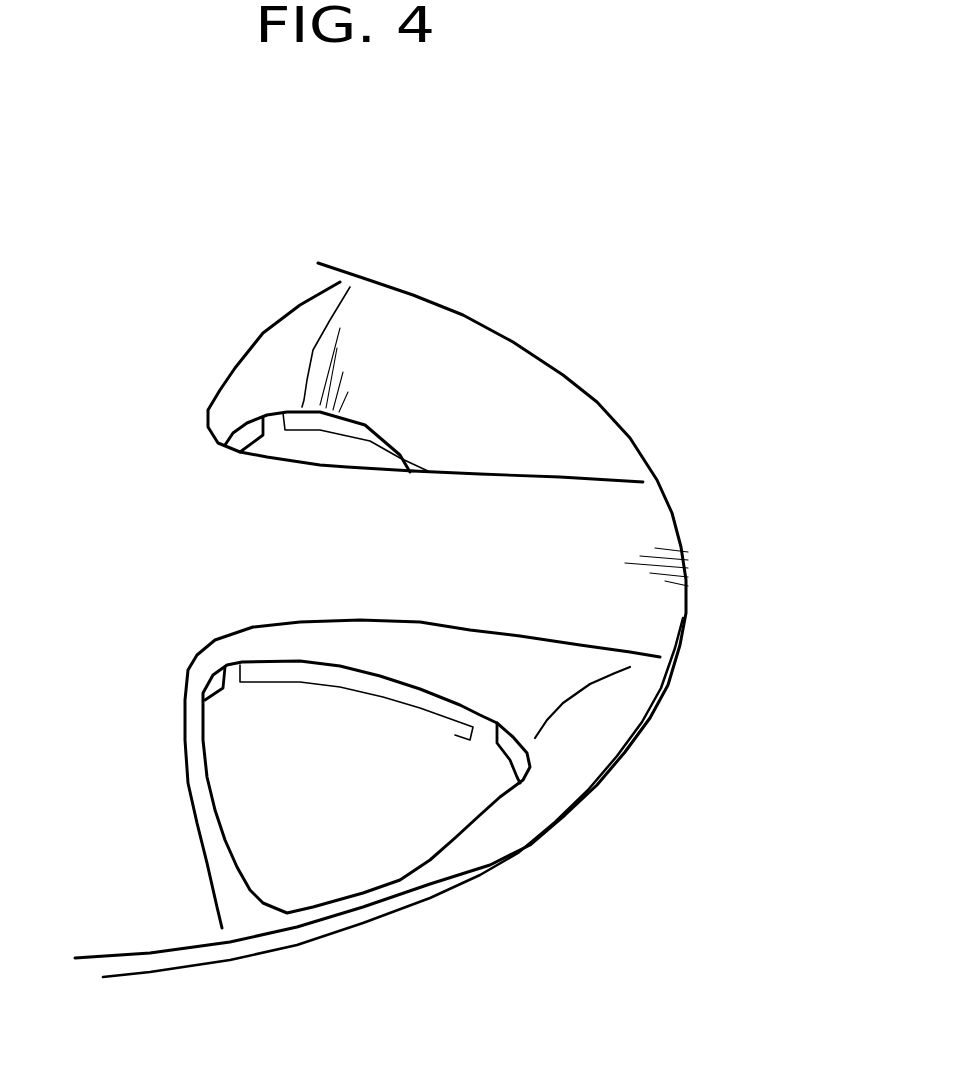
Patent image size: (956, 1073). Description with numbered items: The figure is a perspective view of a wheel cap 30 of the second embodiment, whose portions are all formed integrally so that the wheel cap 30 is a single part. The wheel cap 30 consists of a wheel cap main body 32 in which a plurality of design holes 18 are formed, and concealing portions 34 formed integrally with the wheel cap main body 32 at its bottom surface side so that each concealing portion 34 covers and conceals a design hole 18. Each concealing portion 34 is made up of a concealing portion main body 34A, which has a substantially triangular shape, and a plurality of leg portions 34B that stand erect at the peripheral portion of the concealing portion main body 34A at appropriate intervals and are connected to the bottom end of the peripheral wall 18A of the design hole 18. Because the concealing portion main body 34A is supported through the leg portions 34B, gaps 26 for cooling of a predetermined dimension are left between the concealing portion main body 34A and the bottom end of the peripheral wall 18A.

The design hole 18 is at (320, 517).
The peripheral wall of the design hole 18A is at (377, 751).
The gap for cooling 26 is at (367, 425).
The wheel cap 30 is at (550, 364).
The wheel cap main body 32 is at (381, 620).
The concealing portion 34 is at (367, 601).
The concealing portion main body 34A is at (321, 628).
The leg portion 34B is at (362, 577).